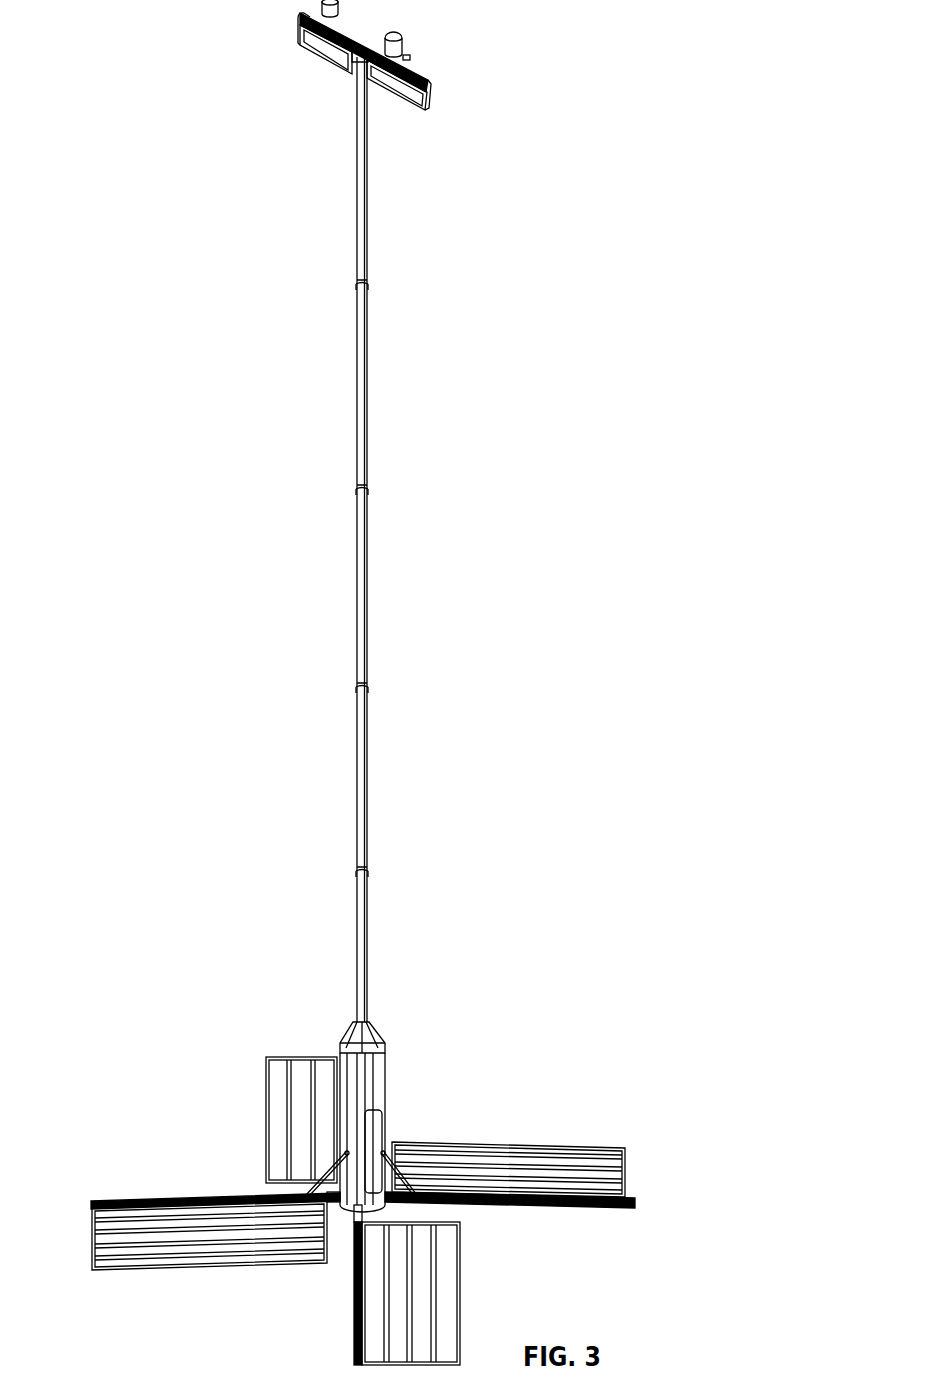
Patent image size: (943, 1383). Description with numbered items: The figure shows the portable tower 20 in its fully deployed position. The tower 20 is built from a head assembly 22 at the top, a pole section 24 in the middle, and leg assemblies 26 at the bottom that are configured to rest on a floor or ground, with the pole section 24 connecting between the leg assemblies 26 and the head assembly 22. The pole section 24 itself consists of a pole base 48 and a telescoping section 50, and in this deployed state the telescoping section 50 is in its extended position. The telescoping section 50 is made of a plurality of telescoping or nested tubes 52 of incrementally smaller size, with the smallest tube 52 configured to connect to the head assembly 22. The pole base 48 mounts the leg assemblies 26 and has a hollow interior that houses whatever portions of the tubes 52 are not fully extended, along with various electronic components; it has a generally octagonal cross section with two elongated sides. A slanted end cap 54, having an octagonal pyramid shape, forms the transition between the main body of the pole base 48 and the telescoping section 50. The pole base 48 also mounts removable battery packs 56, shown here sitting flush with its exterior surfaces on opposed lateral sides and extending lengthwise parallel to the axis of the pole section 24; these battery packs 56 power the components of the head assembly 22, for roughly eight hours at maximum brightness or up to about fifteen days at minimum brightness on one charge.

The portable tower 20 is at (98, 34).
The head assembly 22 is at (413, 21).
The pole section 24 is at (530, 857).
The leg assemblies 26 is at (550, 1214).
The pole base 48 is at (394, 1084).
The telescoping section 50 is at (423, 116).
The tubes 52 is at (344, 512).
The end cap 54 is at (390, 1040).
The battery packs 56 is at (378, 1131).